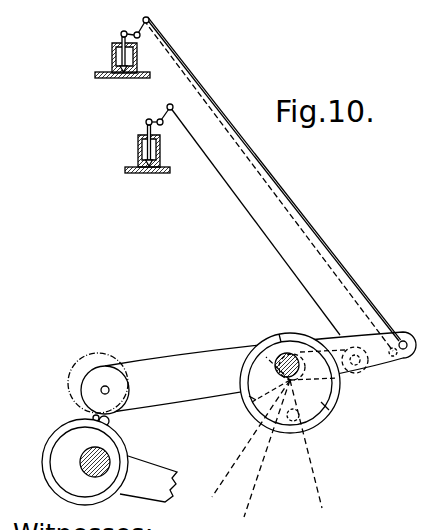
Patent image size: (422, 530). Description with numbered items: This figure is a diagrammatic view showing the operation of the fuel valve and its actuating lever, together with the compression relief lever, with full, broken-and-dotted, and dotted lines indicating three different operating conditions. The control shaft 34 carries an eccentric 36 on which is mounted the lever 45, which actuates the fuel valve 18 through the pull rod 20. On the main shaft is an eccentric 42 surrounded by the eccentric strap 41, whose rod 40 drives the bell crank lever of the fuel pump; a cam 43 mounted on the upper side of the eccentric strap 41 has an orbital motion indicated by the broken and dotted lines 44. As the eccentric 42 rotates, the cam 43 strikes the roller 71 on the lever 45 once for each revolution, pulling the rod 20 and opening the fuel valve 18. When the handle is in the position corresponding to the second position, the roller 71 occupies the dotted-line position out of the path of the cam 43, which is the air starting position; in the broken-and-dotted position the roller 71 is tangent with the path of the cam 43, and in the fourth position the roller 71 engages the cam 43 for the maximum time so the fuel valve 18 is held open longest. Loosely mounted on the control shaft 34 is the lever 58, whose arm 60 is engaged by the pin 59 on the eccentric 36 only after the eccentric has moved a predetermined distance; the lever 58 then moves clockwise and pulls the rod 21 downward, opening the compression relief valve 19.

The fuel valve 18 is at (113, 62).
The compression relief valve 19 is at (140, 153).
The pull rod 20 is at (328, 247).
The rod 21 is at (277, 258).
The control shaft 34 is at (287, 353).
The eccentric 36 is at (327, 412).
The rod 40 is at (155, 466).
The eccentric strap 41 is at (53, 439).
The eccentric 42 is at (65, 475).
The cam 43 is at (92, 420).
The orbital path of cam 44 is at (110, 423).
The lever 45 is at (196, 351).
The lever 58 is at (343, 392).
The pin 59 is at (266, 455).
The arm 60 is at (252, 402).
The roller 71 is at (108, 366).